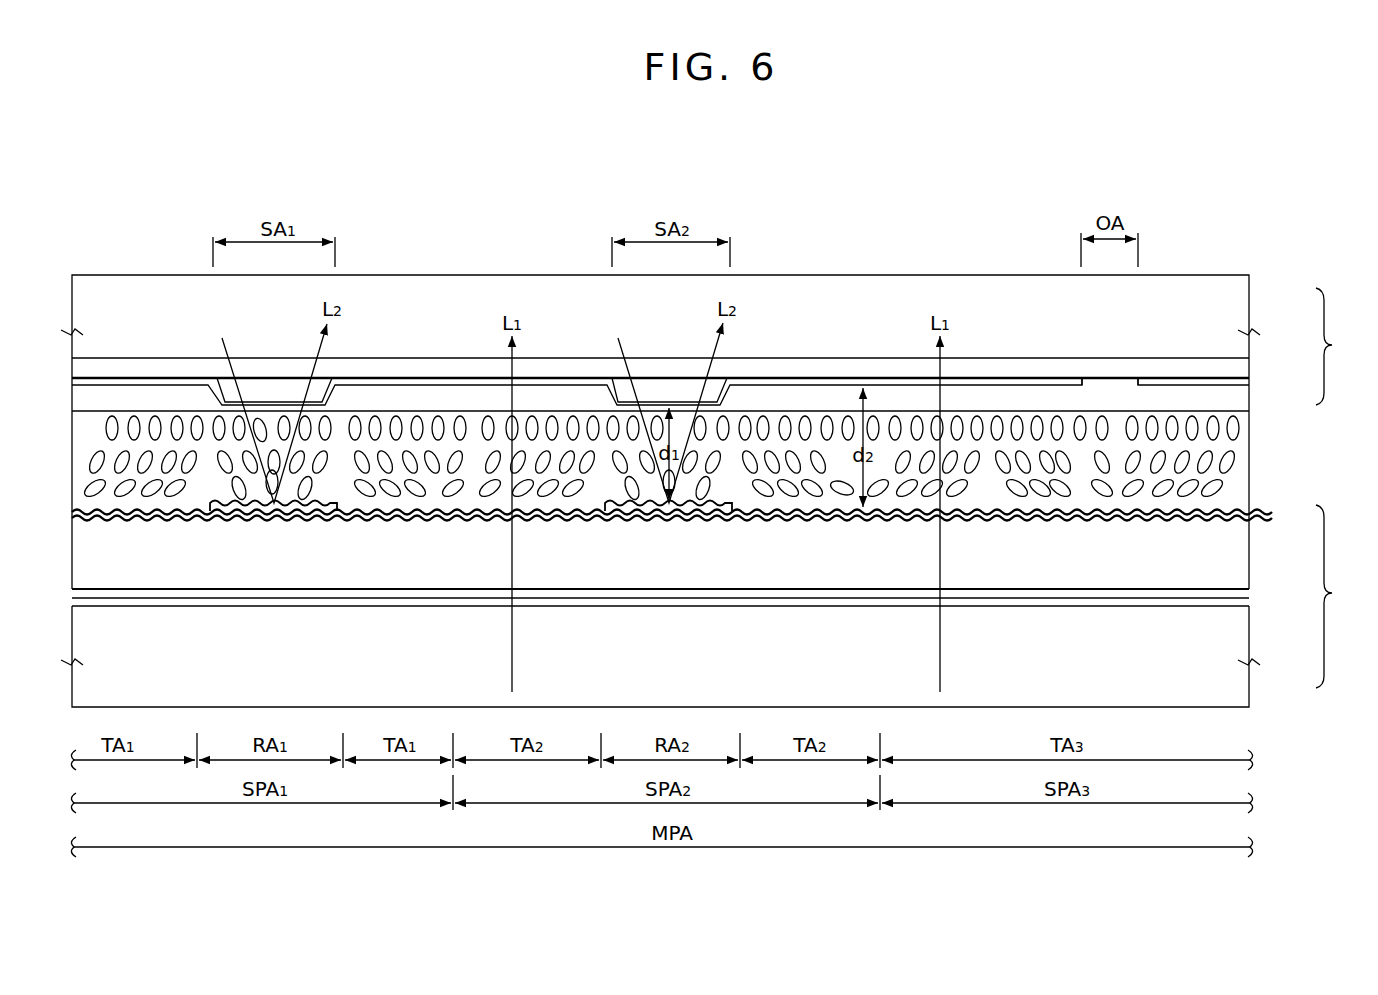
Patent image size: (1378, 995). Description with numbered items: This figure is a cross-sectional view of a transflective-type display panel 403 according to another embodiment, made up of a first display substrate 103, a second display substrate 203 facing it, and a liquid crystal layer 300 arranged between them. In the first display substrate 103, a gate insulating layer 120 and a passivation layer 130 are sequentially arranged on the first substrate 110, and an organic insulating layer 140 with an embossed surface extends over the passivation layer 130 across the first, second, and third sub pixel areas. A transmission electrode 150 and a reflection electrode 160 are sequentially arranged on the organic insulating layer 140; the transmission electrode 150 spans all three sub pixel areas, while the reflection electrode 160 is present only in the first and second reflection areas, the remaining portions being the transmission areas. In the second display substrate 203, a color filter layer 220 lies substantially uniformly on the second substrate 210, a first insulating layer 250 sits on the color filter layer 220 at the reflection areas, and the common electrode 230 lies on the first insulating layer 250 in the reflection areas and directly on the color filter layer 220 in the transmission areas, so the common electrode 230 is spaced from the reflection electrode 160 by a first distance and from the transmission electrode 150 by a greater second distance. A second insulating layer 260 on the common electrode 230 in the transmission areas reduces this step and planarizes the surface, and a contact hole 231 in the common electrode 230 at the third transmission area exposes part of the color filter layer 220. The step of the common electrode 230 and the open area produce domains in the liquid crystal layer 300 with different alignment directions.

The transflective-type display panel 403 is at (677, 178).
The second substrate 210 is at (1249, 297).
The color filter layer 220 is at (1249, 360).
The common electrode 230 is at (691, 312).
The contact hole 231 is at (1100, 382).
The second display substrate 203 is at (1341, 346).
The second insulating layer 260 is at (143, 395).
The first insulating layer 250 is at (270, 395).
The liquid crystal layer 300 is at (1228, 462).
The transmission electrode 150 is at (1249, 512).
The reflection electrode 160 is at (274, 504).
The organic insulating layer 140 is at (1249, 573).
The passivation layer 130 is at (1249, 592).
The gate insulating layer 120 is at (1249, 604).
The first substrate 110 is at (1249, 675).
The first display substrate 103 is at (1342, 596).